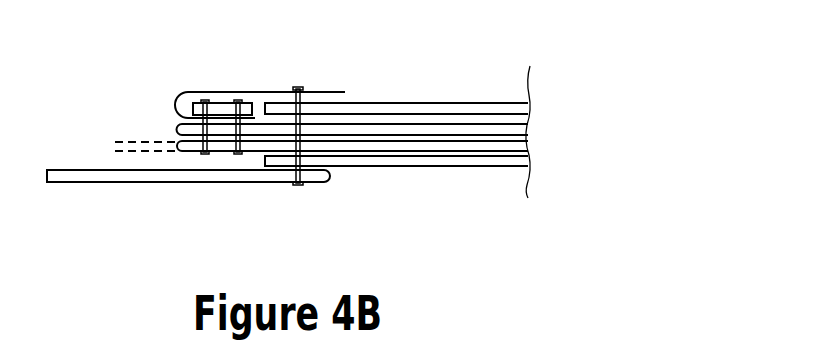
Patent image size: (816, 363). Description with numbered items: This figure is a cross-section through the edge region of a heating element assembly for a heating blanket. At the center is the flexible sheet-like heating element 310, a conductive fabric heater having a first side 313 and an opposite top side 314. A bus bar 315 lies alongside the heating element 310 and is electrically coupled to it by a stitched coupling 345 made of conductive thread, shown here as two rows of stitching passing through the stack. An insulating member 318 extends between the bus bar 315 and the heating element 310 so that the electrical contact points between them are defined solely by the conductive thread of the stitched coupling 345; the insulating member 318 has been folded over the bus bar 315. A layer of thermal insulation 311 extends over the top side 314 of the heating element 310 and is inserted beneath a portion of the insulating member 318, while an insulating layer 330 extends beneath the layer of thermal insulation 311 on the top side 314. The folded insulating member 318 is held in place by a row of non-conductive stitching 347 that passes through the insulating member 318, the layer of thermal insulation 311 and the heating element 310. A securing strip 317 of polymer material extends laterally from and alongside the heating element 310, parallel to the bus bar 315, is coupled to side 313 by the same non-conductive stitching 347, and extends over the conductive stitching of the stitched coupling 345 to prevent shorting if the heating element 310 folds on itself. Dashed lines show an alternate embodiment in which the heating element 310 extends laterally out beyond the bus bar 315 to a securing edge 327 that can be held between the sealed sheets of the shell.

The heating element 310 is at (192, 151).
The layer of thermal insulation 311 is at (413, 106).
The side of heating element 313 is at (249, 155).
The side of heating element 314 is at (284, 130).
The bus bar 315 is at (187, 92).
The securing strip 317 is at (107, 183).
The insulating member 318 is at (259, 92).
The securing edge 327 is at (149, 153).
The insulating layer 330 is at (177, 128).
The stitched coupling 345 is at (236, 100).
The non-conductive stitching 347 is at (298, 87).